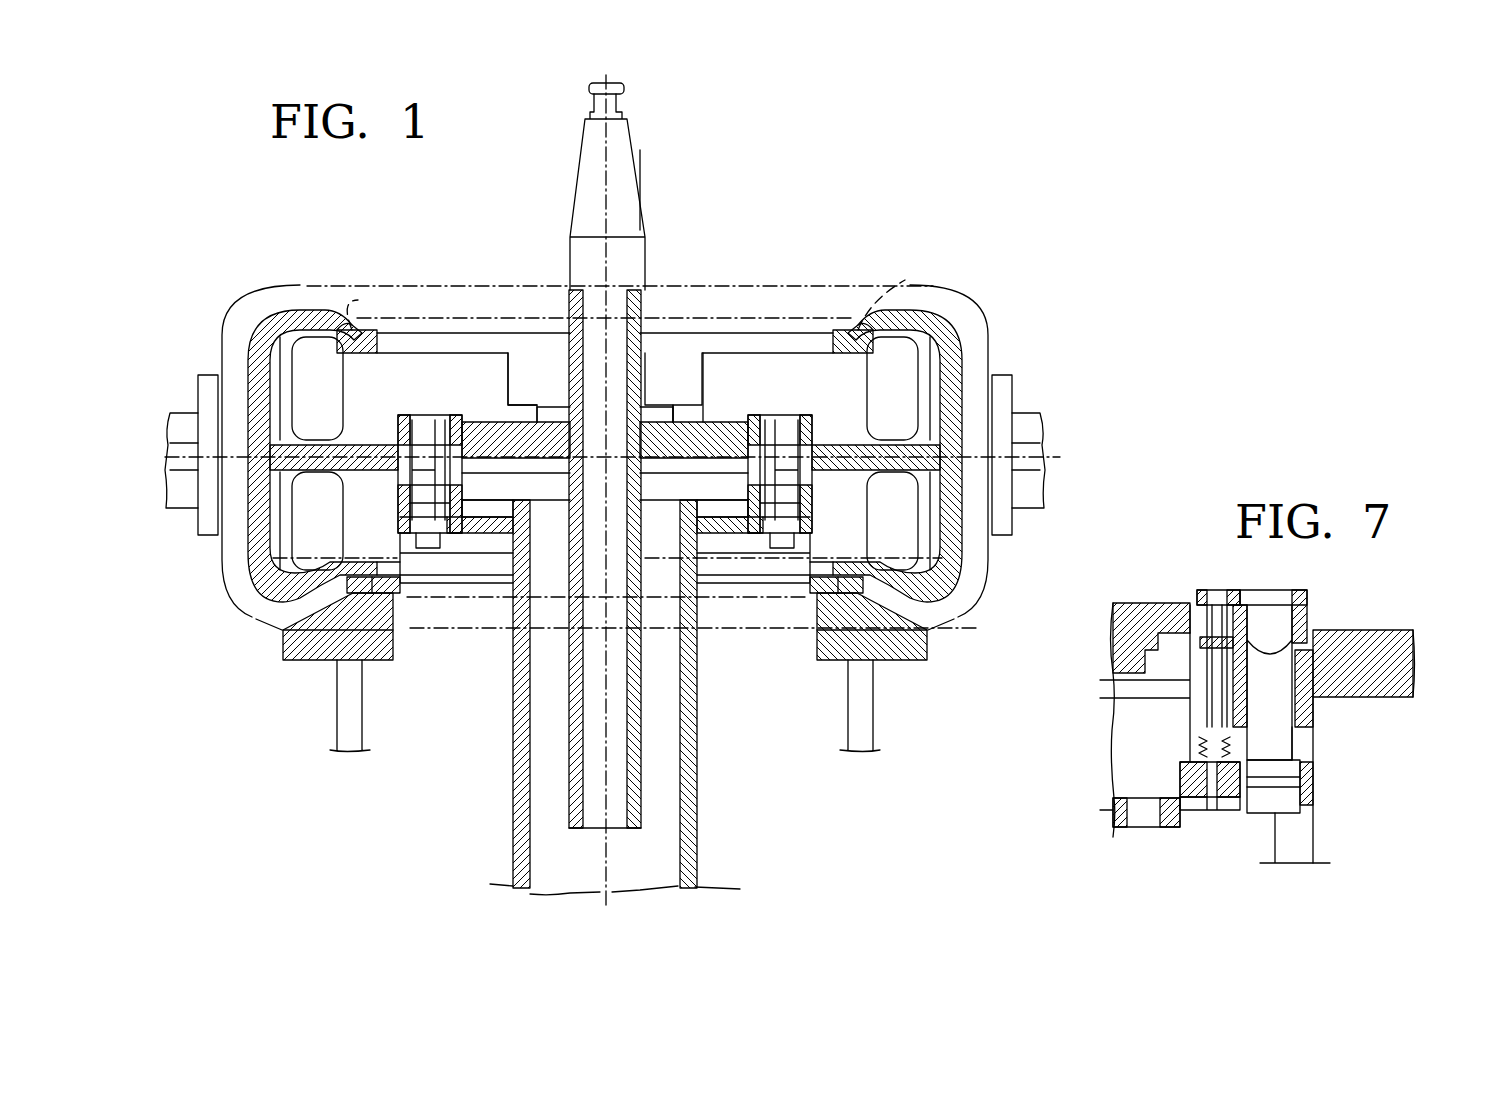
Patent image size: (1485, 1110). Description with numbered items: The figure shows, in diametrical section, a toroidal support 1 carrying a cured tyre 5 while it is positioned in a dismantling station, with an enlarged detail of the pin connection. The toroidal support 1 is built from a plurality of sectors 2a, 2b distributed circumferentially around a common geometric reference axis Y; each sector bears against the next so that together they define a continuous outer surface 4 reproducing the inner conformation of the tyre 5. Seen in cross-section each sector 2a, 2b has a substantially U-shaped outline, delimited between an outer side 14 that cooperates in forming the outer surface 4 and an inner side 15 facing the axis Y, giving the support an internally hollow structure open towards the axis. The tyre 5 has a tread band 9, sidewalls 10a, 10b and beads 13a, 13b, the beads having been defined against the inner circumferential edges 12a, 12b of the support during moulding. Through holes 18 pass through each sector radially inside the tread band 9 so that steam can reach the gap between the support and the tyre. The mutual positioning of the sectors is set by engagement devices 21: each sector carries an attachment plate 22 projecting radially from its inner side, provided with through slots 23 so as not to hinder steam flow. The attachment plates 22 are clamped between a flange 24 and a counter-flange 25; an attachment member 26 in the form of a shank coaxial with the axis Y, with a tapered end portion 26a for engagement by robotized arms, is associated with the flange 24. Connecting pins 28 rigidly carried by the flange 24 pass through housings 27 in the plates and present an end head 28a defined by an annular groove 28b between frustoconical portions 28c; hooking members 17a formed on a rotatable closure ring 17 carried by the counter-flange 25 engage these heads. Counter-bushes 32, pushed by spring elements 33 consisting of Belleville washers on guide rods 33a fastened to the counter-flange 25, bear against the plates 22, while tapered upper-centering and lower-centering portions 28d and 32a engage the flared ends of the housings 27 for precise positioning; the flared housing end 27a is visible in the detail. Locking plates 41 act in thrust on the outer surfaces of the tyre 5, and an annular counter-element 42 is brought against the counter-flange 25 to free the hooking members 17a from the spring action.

In FIG. 1, the toroidal support 1 is at (850, 192).
In FIG. 1, the sector 2a is at (262, 318).
In FIG. 1, the sector 2b is at (388, 360).
In FIG. 1, the outer surface 4 is at (993, 322).
In FIG. 1, the tyre 5 is at (982, 598).
In FIG. 1, the tread band 9 is at (985, 332).
In FIG. 1, the sidewall 10a is at (905, 280).
In FIG. 1, the sidewall 10b is at (890, 665).
In FIG. 1, the inner circumferential edge 12a is at (832, 352).
In FIG. 1, the inner circumferential edge 12b is at (403, 583).
In FIG. 1, the tyre bead 13a is at (358, 300).
In FIG. 1, the tyre bead 13b is at (312, 660).
In FIG. 1, the outer side 14 is at (240, 628).
In FIG. 1, the inner side 15 is at (492, 394).
In FIG. 1, the closure ring 17 is at (748, 525).
In FIG. 7, the closure ring 17 is at (1210, 822).
In FIG. 1, the hooking member 17a is at (790, 530).
In FIG. 1, the through hole 18 is at (250, 345).
In FIG. 1, the engagement devices 21 is at (830, 494).
In FIG. 1, the attachment plate 22 is at (357, 333).
In FIG. 7, the attachment plate 22 is at (1385, 660).
In FIG. 1, the through slot 23 is at (265, 545).
In FIG. 1, the flange 24 is at (522, 422).
In FIG. 7, the flange 24 is at (1135, 602).
In FIG. 1, the counter-flange 25 is at (492, 535).
In FIG. 7, the counter-flange 25 is at (1162, 781).
In FIG. 1, the attachment member 26 is at (640, 162).
In FIG. 1, the tapered end portion 26a is at (636, 193).
In FIG. 7, the through housing 27 is at (1315, 640).
In FIG. 7, the cup cavity 27a is at (1285, 648).
In FIG. 1, the connecting pin 28 is at (430, 412).
In FIG. 7, the connecting pin 28 is at (1265, 655).
In FIG. 1, the end head 28a is at (420, 540).
In FIG. 7, the end head 28a is at (1270, 825).
In FIG. 1, the annular groove 28b is at (395, 533).
In FIG. 7, the annular groove 28b is at (1270, 795).
In FIG. 7, the frustoconical portion 28c is at (1262, 822).
In FIG. 7, the upper-centering portion 28d is at (1195, 680).
In FIG. 7, the counter-bush 32 is at (1313, 745).
In FIG. 7, the lower-centering portion 32a is at (1318, 722).
In FIG. 7, the spring element 33 is at (1195, 752).
In FIG. 7, the guide rod 33a is at (1200, 733).
In FIG. 1, the locking plate 41 is at (205, 405).
In FIG. 1, the annular counter-element 42 is at (520, 640).
In FIG. 1, the geometric reference axis Y is at (607, 140).